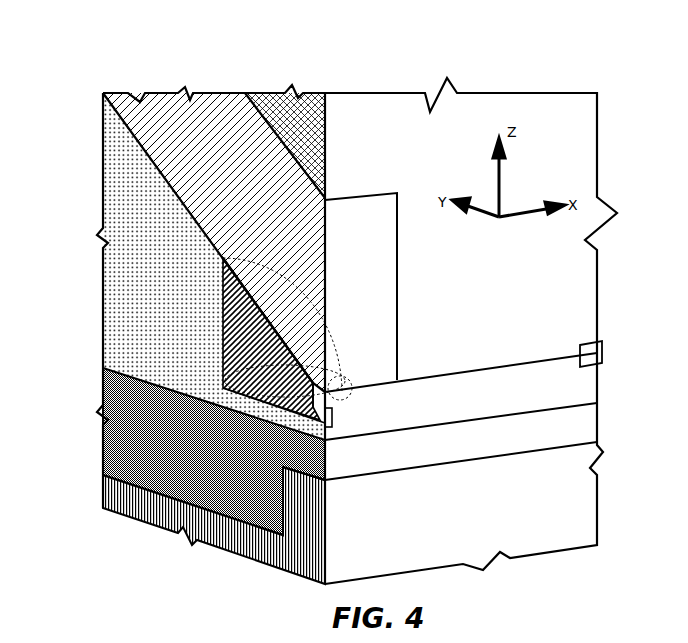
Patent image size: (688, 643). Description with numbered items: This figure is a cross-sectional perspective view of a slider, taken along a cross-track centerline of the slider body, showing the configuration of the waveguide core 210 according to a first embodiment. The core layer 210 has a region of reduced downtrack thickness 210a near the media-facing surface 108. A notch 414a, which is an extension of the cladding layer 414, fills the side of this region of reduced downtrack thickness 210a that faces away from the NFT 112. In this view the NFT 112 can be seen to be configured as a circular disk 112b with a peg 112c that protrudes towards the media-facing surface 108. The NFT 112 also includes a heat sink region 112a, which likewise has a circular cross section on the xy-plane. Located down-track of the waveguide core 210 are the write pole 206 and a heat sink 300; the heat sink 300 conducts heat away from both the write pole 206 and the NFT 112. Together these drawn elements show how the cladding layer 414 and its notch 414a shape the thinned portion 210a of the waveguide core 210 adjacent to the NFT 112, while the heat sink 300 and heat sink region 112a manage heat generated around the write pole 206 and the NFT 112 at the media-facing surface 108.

The NFT 112 is at (237, 343).
The heat sink region 112a is at (284, 339).
The circular disk 112b is at (348, 398).
The peg 112c is at (333, 420).
The write pole 206 is at (205, 92).
The heat sink 300 is at (272, 92).
The waveguide core 210 is at (125, 438).
The region of reduced downtrack thickness 210a is at (553, 430).
The cladding layer 414 is at (120, 494).
The notch 414a is at (297, 515).
The media-facing surface 108 is at (592, 367).